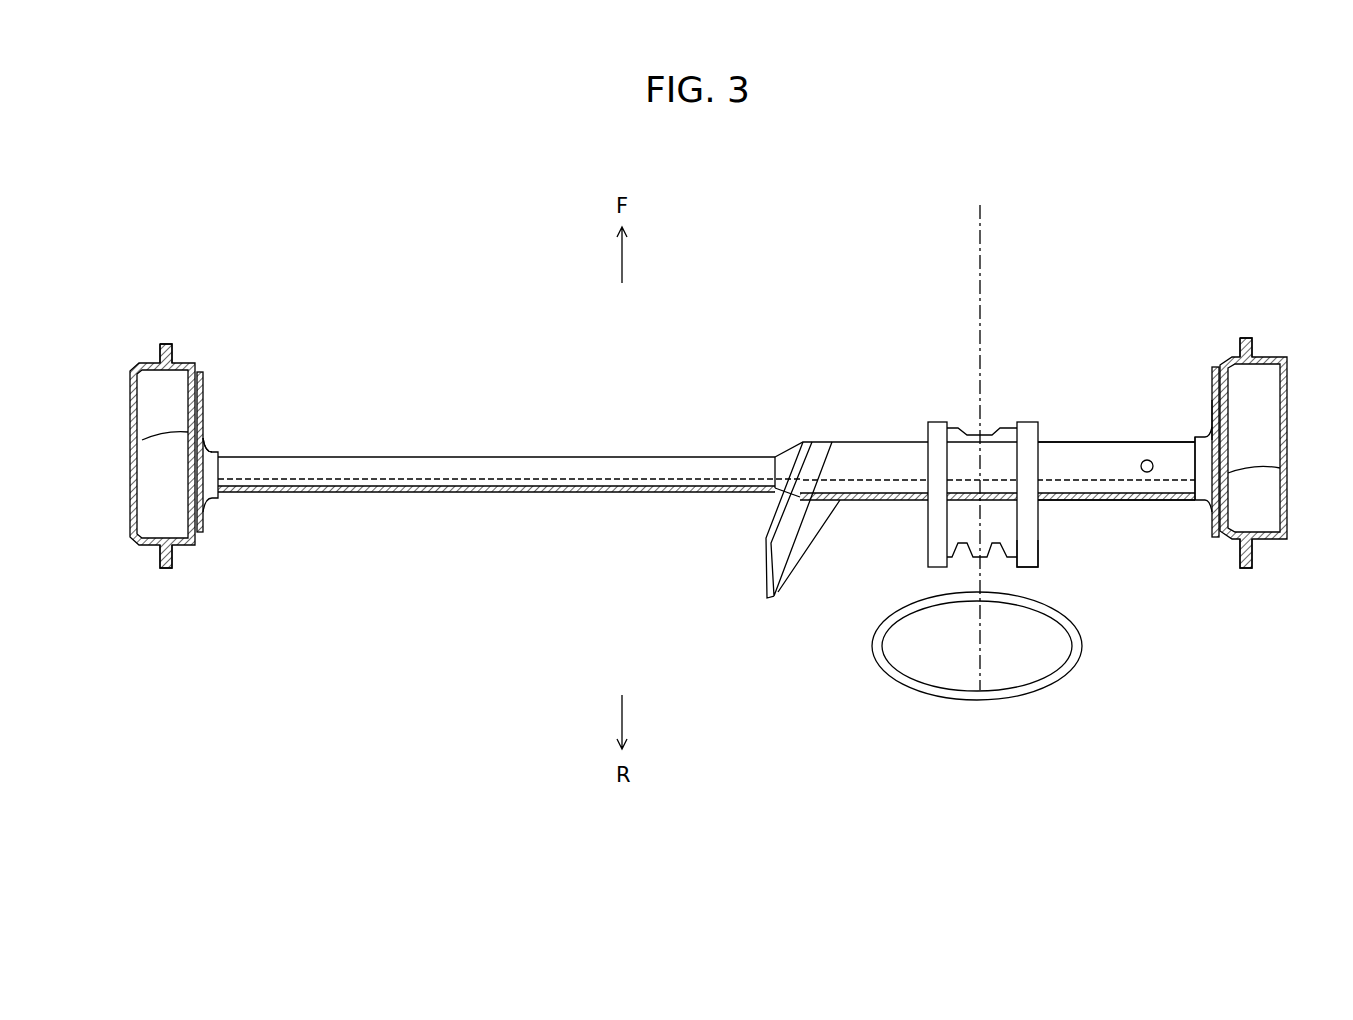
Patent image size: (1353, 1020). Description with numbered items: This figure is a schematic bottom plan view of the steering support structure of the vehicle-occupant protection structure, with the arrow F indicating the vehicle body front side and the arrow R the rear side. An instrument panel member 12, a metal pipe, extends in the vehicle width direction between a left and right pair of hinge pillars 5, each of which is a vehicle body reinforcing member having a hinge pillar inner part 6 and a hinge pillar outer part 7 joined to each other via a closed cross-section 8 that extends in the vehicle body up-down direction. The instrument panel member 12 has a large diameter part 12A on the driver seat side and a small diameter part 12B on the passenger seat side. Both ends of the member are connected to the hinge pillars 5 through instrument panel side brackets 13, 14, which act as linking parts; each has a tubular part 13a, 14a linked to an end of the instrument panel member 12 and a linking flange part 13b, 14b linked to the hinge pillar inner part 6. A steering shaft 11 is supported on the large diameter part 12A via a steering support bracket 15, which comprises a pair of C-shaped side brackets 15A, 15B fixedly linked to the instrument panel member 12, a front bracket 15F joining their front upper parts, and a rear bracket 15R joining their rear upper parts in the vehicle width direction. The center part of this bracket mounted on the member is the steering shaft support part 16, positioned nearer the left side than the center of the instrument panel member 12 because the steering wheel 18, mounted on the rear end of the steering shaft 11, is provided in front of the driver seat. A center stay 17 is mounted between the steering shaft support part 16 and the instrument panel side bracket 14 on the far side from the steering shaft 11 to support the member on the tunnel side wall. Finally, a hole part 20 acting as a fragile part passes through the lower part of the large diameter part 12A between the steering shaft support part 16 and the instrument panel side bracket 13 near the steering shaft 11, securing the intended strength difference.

The hinge pillar 5 is at (121, 402).
The hinge pillar inner part 6 is at (142, 441).
The hinge pillar outer part 7 is at (130, 492).
The closed cross-section 8 is at (153, 517).
The steering shaft 11 is at (981, 302).
The instrument panel member 12 is at (875, 430).
The large diameter part 12A is at (1085, 441).
The small diameter part 12B is at (500, 456).
The instrument panel side bracket 13 is at (1206, 409).
The tubular part 13a is at (1200, 455).
The linking flange part 13b is at (1212, 368).
The instrument panel side bracket 14 is at (206, 506).
The tubular part 14a is at (214, 446).
The linking flange part 14b is at (204, 384).
The steering support bracket 15 is at (974, 465).
The side bracket 15A is at (1030, 556).
The side bracket 15B is at (937, 555).
The front bracket 15F is at (958, 430).
The rear bracket 15R is at (963, 523).
The steering shaft support part 16 is at (995, 418).
The center stay 17 is at (775, 530).
The steering wheel 18 is at (1030, 692).
The hole part 20 is at (1147, 473).